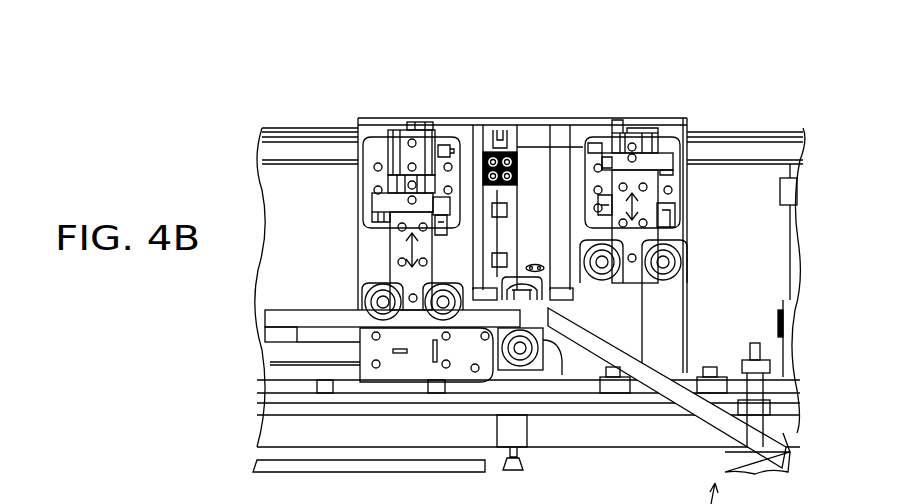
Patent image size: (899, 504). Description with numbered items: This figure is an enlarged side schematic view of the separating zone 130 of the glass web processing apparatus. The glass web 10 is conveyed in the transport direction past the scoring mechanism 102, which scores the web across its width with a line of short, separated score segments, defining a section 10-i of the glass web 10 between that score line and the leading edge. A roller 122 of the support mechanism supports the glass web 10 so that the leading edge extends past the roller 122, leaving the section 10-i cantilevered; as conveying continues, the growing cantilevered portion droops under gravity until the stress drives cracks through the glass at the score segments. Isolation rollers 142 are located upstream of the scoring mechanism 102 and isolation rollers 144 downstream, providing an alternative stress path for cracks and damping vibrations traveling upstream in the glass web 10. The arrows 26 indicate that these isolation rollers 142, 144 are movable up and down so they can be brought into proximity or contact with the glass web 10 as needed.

The separating zone 130 is at (752, 111).
The arrows 26 is at (407, 250).
The isolation rollers 142 is at (362, 283).
The isolation rollers 144 is at (683, 242).
The glass web 10 is at (270, 317).
The scoring mechanism 102 is at (557, 308).
The roller 122 is at (560, 350).
The section of the glass web 10-i is at (793, 432).